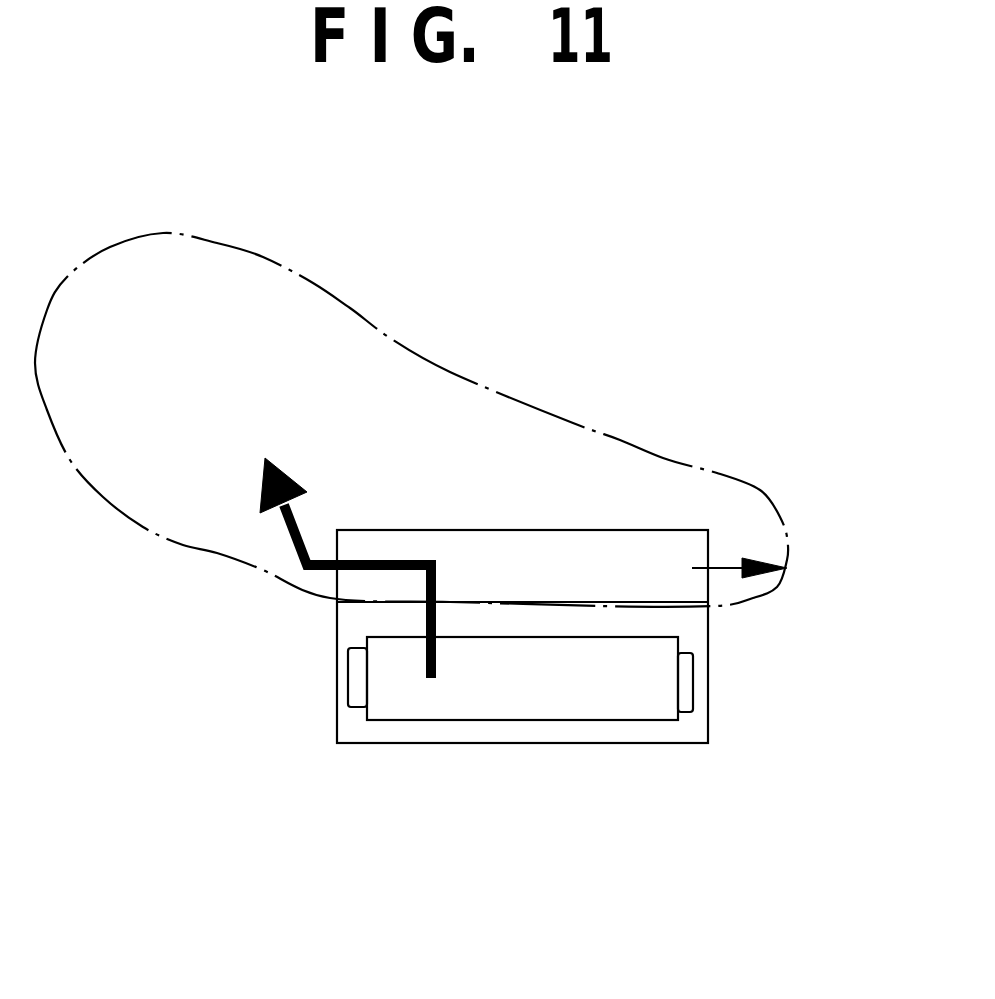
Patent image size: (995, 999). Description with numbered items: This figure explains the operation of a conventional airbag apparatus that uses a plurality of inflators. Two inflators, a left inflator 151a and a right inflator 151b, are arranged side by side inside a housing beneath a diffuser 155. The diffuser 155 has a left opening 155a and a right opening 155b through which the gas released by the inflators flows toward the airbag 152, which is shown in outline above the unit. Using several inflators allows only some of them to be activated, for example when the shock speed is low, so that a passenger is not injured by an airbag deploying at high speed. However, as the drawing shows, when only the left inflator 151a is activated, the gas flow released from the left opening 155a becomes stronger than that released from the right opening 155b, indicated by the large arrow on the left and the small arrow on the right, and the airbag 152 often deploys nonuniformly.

The airbag 152 is at (640, 445).
The diffuser 155 is at (513, 530).
The left opening 155a is at (337, 540).
The right opening 155b is at (708, 548).
The left inflator 151a is at (435, 720).
The right inflator 151b is at (613, 722).